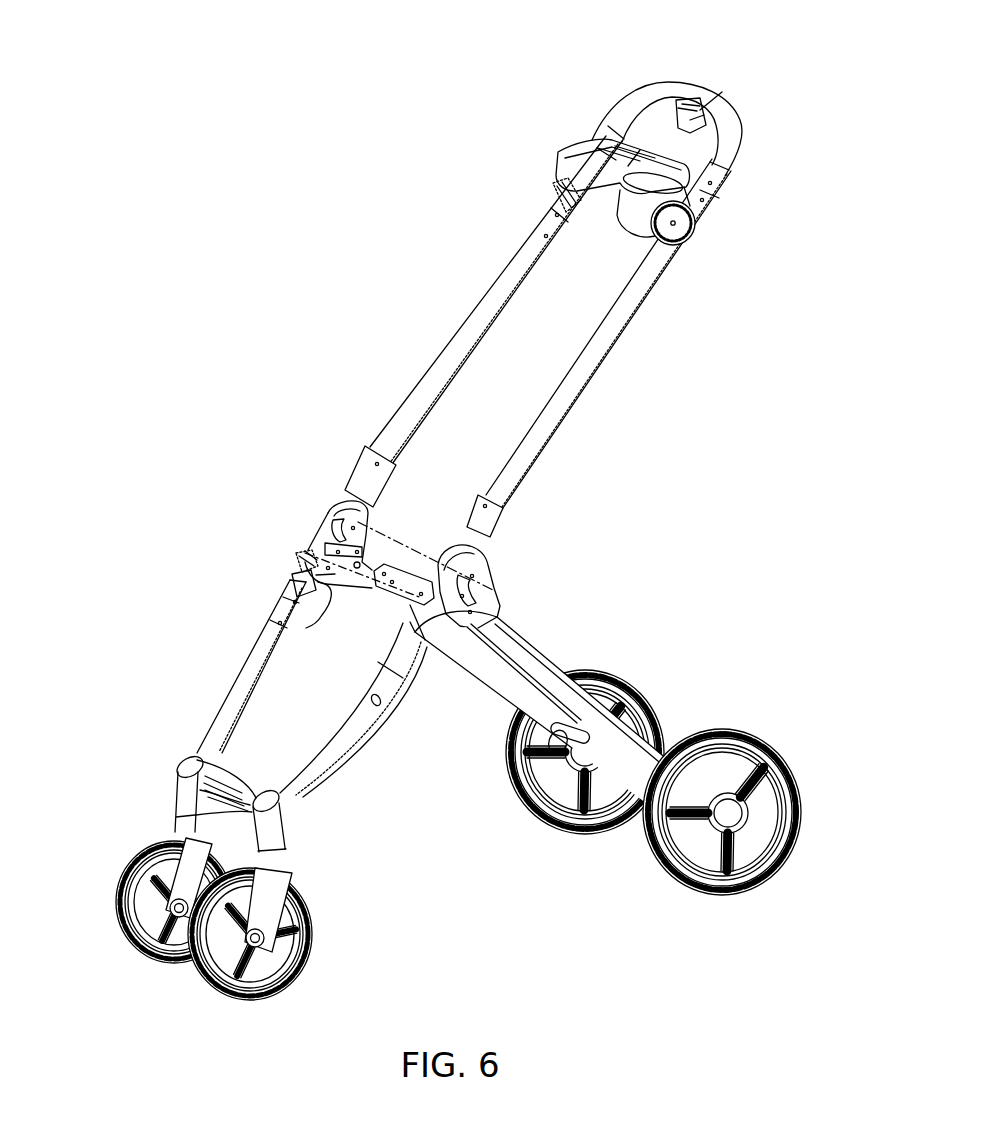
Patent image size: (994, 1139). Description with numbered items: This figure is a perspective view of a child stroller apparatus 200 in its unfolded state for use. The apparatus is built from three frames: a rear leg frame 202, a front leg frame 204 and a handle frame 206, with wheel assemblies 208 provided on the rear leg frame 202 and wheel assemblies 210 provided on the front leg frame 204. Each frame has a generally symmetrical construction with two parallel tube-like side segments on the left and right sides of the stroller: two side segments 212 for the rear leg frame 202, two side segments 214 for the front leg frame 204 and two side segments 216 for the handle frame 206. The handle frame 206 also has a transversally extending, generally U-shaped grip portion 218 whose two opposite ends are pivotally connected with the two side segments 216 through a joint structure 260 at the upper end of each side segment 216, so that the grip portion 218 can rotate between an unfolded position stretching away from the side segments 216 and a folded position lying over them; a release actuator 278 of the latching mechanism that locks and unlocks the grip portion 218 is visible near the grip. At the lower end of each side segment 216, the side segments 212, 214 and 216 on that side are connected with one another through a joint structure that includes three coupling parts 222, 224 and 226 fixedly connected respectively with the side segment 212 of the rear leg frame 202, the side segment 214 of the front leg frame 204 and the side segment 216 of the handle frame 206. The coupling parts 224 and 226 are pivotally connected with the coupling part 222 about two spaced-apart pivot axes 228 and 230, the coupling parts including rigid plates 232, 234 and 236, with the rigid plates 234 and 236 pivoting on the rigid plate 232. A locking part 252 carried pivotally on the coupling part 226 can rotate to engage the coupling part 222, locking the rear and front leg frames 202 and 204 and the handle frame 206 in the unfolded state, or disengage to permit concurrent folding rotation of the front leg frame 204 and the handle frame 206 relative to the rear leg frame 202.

The child stroller apparatus 200 is at (93, 37).
The rear leg frame 202 is at (494, 716).
The front leg frame 204 is at (336, 782).
The handle frame 206 is at (612, 377).
The wheel assemblies 208 is at (548, 826).
The wheel assemblies 210 is at (134, 950).
The side segments 212 is at (530, 644).
The side segments 214 is at (207, 735).
The side segments 216 is at (447, 360).
The grip portion 218 is at (737, 142).
The coupling part 222 is at (362, 592).
The coupling part 224 is at (292, 573).
The coupling part 226 is at (360, 490).
The pivot axis 228 is at (291, 553).
The pivot axis 230 is at (318, 510).
The rigid plate 232 is at (332, 522).
The rigid plate 234 is at (320, 585).
The rigid plate 236 is at (353, 518).
The locking part 252 is at (320, 537).
The joint structure 260 is at (702, 241).
The release actuator 278 is at (674, 94).